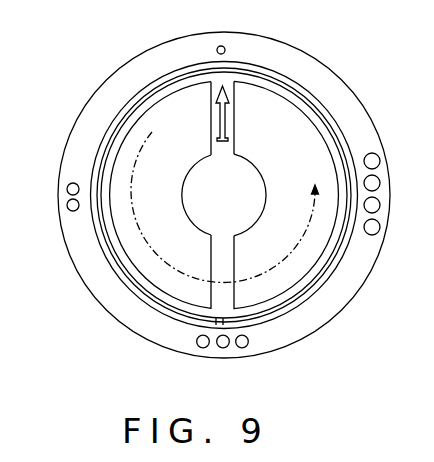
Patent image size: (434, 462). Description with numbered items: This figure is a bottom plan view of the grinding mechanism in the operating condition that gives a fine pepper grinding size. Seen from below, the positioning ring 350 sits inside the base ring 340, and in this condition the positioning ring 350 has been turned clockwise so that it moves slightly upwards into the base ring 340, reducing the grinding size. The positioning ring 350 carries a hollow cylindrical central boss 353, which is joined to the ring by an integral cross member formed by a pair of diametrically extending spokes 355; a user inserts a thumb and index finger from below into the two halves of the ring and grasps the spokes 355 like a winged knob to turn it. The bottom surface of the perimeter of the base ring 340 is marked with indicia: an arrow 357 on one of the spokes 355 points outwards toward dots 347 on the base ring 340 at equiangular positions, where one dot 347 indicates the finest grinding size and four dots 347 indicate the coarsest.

The base ring 340 is at (126, 341).
The dots 347 is at (217, 52).
The positioning ring 350 is at (314, 106).
The central boss 353 is at (242, 192).
The spokes 355 is at (211, 121).
The arrow 357 is at (215, 102).